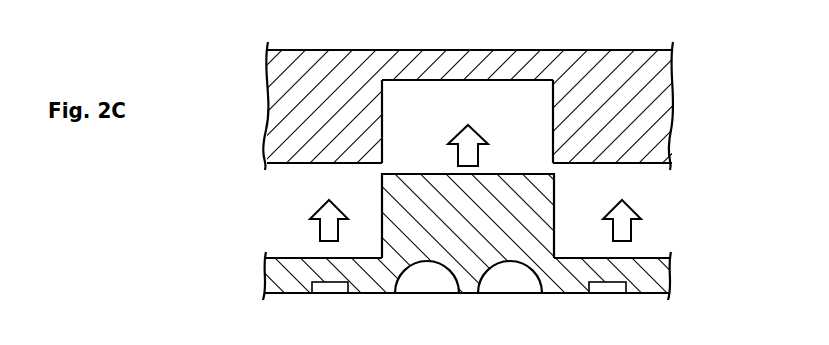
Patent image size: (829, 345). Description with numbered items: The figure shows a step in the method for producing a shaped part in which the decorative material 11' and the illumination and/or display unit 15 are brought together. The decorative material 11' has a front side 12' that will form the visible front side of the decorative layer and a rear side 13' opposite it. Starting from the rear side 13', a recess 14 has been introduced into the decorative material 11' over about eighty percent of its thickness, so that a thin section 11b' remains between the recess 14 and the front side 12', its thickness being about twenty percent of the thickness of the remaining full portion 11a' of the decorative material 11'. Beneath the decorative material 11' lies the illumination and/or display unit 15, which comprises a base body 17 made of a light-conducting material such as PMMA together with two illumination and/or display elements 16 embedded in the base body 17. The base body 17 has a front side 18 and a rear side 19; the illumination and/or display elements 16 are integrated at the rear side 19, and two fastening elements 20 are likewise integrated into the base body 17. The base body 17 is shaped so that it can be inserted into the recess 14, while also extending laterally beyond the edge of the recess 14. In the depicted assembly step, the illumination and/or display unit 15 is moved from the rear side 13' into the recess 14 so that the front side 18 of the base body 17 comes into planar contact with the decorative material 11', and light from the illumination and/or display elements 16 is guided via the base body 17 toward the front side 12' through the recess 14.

The decorative material 11' is at (452, 102).
The portion of the remaining decorative material 11a' is at (324, 84).
The section of the decorative material 11b' is at (467, 42).
The front side of the decorative material 12' is at (469, 28).
The rear side of the decorative material 13' is at (642, 140).
The recess 14 is at (479, 118).
The illumination and/or display unit 15 is at (469, 248).
The illumination and/or display elements 16 is at (496, 280).
The base body 17 is at (503, 218).
The front side of the base body 18 is at (295, 248).
The rear side of the base body 19 is at (648, 296).
The fastening elements 20 is at (332, 295).